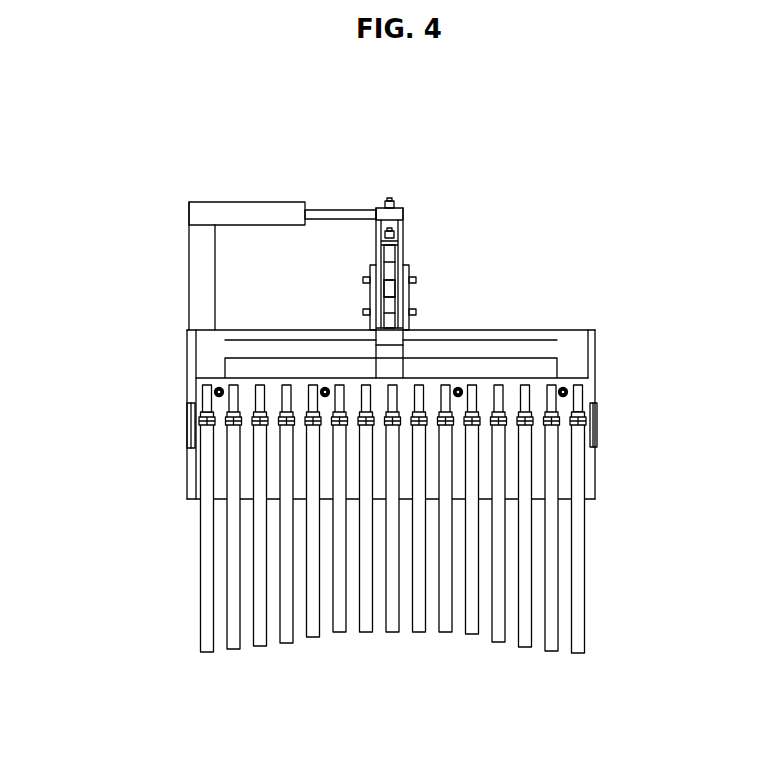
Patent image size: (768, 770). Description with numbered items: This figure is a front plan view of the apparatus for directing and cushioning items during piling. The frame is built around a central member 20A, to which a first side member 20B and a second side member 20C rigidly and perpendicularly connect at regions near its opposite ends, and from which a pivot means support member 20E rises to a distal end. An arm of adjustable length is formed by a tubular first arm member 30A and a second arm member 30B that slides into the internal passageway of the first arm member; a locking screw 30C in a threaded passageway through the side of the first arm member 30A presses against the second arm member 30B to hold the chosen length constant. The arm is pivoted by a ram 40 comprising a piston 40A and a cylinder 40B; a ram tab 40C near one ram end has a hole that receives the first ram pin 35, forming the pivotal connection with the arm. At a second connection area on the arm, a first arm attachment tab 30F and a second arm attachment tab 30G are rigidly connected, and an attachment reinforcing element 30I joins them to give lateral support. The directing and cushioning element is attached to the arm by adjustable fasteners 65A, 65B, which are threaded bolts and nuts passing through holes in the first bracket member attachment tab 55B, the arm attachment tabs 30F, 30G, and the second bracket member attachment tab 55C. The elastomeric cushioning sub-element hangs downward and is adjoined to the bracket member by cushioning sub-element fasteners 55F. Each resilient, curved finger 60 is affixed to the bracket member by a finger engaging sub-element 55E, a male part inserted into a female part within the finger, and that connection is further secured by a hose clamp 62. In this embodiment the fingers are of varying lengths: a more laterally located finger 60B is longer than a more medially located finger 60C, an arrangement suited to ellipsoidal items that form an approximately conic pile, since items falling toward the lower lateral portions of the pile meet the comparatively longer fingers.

The central member 20A is at (530, 340).
The first side member 20B is at (600, 442).
The second side member 20C is at (187, 433).
The pivot means support member 20E is at (199, 262).
The first arm member 30A is at (404, 233).
The second arm member 30B is at (393, 297).
The locking screw 30C is at (404, 222).
The first arm attachment tab 30F is at (388, 258).
The second arm attachment tab 30G is at (405, 252).
The attachment reinforcing element 30I is at (445, 342).
The first ram pin 35 is at (394, 203).
The ram 40 is at (312, 205).
The piston 40A is at (340, 210).
The cylinder 40B is at (244, 205).
The ram tab 40C is at (379, 207).
The first bracket member attachment tab 55B is at (368, 338).
The second bracket member attachment tab 55C is at (530, 335).
The finger engaging sub-element 55E is at (575, 393).
The cushioning sub-element fastener 55F is at (213, 388).
The finger 60 is at (202, 545).
The more laterally located finger 60B is at (365, 633).
The more medially located finger 60C is at (207, 655).
The hose clamp 62 is at (597, 423).
The adjustable fastener 65A is at (414, 281).
The adjustable fastener 65B is at (414, 311).